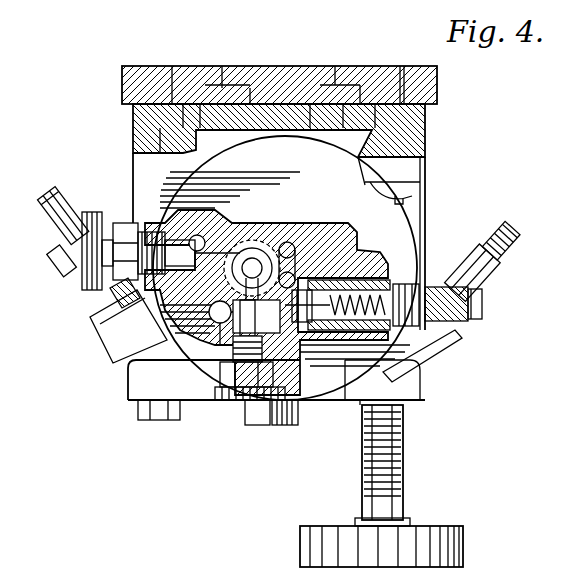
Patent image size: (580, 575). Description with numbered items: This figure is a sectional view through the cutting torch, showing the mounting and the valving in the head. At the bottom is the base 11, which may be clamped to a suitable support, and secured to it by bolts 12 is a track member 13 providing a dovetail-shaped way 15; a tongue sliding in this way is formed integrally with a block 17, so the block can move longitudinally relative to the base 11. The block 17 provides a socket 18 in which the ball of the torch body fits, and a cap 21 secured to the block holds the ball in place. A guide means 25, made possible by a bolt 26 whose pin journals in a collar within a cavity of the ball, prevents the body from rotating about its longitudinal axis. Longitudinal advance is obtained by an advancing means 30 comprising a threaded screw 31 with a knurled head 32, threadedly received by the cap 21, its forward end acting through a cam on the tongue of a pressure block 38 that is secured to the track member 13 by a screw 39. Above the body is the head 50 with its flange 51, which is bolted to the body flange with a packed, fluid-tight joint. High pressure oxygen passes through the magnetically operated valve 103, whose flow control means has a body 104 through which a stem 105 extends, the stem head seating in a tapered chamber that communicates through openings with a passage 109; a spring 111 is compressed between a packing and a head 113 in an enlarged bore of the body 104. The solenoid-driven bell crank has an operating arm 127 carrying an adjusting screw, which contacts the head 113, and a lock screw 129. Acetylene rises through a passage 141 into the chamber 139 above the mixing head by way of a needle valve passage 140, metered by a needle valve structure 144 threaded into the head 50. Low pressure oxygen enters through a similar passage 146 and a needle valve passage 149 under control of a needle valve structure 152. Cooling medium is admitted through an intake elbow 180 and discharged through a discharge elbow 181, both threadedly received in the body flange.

The base 11 is at (271, 74).
The bolts 12 is at (404, 70).
The track member 13 is at (216, 114).
The way 15 is at (343, 108).
The block 17 is at (439, 226).
The socket 18 is at (76, 356).
The cap 21 is at (418, 385).
The guide means 25 is at (266, 422).
The bolt 26 is at (296, 424).
The advancing means 30 is at (341, 493).
The threaded screw 31 is at (392, 500).
The knurled head 32 is at (456, 546).
The pressure block 38 is at (410, 170).
The screw 39 is at (400, 193).
The head 50 is at (307, 238).
The flange 51 is at (377, 217).
The magnetically operated valve 103 is at (357, 346).
The body 104 is at (394, 330).
The stem 105 is at (356, 408).
The passage 109 is at (358, 251).
The spring 111 is at (376, 290).
The head 113 is at (412, 312).
The operating arm 127 is at (433, 287).
The lock screw 129 is at (483, 296).
The chamber 139 is at (276, 248).
The needle valve passage 140 is at (290, 340).
The passage 141 is at (233, 338).
The needle valve structure 144 is at (245, 376).
The passage 146 is at (200, 236).
The needle valve passage 149 is at (234, 252).
The needle valve structure 152 is at (93, 267).
The intake elbow 180 is at (465, 350).
The discharge elbow 181 is at (115, 323).